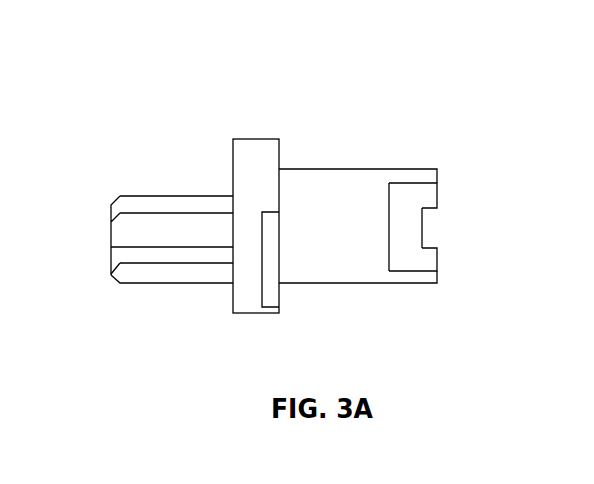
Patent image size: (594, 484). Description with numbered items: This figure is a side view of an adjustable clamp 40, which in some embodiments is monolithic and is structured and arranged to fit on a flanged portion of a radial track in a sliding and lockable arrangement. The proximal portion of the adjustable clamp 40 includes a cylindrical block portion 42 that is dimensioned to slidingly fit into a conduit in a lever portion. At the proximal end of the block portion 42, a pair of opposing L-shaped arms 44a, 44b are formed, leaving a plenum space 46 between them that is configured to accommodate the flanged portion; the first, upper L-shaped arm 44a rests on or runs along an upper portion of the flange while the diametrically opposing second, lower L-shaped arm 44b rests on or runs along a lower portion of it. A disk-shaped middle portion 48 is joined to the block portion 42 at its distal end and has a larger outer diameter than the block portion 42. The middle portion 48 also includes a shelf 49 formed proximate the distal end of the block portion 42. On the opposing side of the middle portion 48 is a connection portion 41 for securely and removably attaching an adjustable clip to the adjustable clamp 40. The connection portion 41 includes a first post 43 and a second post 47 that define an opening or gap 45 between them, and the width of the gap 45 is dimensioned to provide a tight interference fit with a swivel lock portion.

The adjustable clamp 40 is at (391, 52).
The connection portion 41 is at (127, 159).
The block portion 42 is at (339, 167).
The first post 43 is at (193, 223).
The first L-shaped arm 44a is at (437, 170).
The second L-shaped arm 44b is at (437, 283).
The opening or gap 45 is at (147, 253).
The plenum space 46 is at (406, 222).
The second post 47 is at (175, 284).
The middle portion 48 is at (255, 138).
The shelf 49 is at (270, 290).